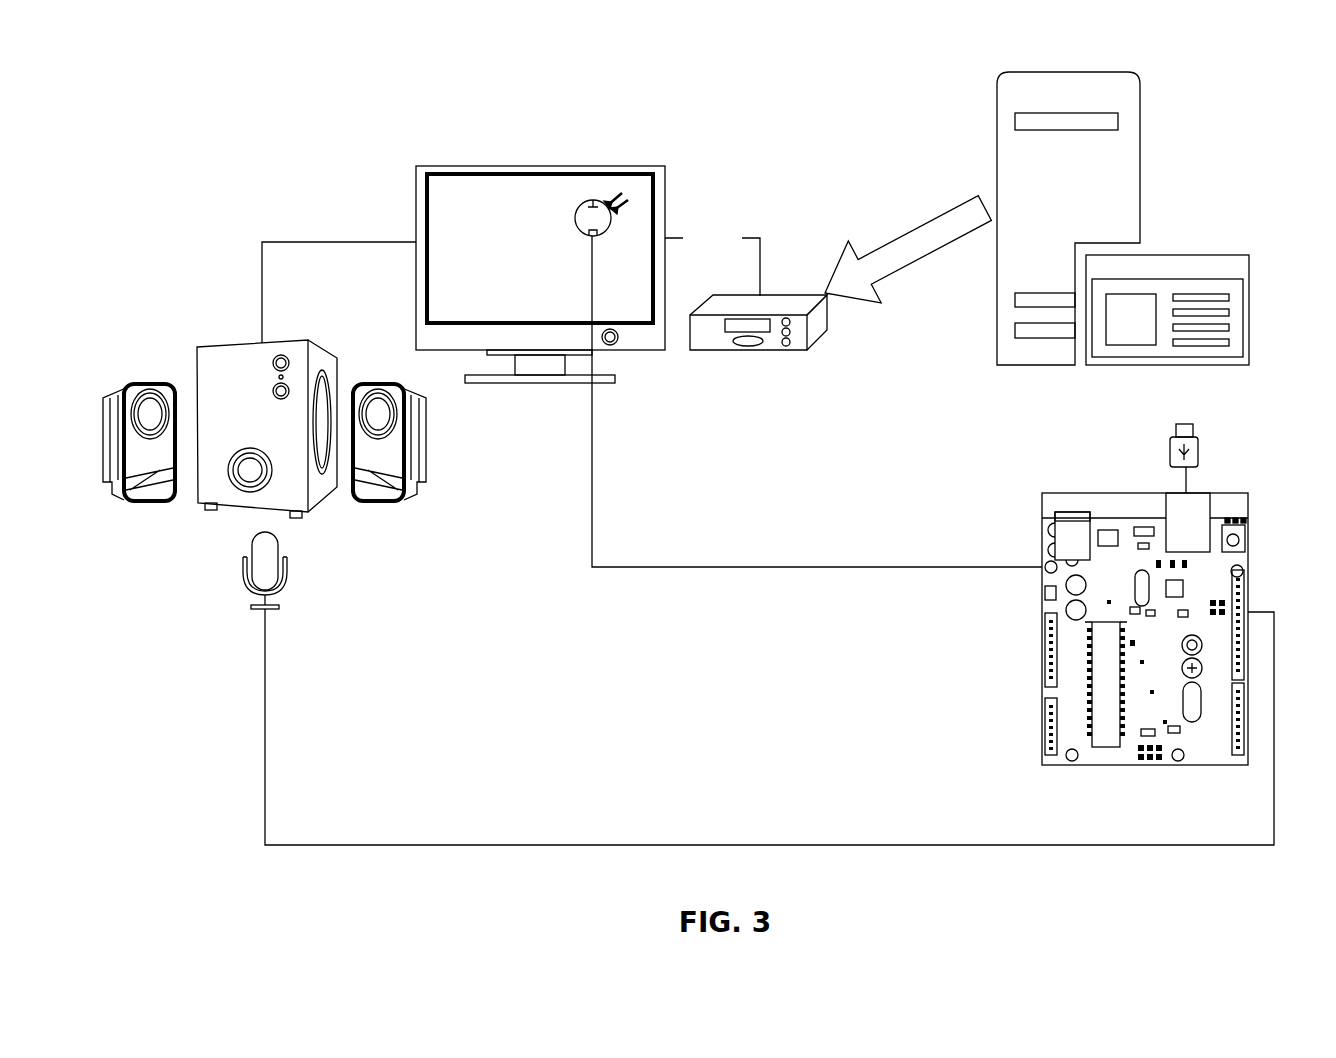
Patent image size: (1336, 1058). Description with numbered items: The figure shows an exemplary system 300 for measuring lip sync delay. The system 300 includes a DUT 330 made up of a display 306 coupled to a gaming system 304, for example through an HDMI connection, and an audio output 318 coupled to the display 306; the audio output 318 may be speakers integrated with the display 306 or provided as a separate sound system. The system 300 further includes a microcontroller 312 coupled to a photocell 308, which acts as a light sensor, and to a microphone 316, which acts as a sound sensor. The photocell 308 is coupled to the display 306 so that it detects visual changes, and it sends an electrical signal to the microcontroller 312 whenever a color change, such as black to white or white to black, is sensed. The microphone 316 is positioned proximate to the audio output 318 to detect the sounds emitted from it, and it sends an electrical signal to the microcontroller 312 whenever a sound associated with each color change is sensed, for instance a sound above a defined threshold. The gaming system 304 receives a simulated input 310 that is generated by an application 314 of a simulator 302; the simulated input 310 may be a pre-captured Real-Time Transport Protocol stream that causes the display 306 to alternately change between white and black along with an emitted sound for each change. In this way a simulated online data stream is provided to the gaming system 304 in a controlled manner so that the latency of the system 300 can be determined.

The system 300 is at (1162, 46).
The simulator 302 is at (1051, 219).
The gaming system 304 is at (777, 296).
The display 306 is at (488, 183).
The photocell 308 is at (584, 203).
The simulated input 310 is at (960, 203).
The microcontroller 312 is at (1137, 722).
The application 314 is at (1166, 296).
The microphone 316 is at (262, 560).
The audio output 318 is at (250, 343).
The DUT 330 is at (408, 226).